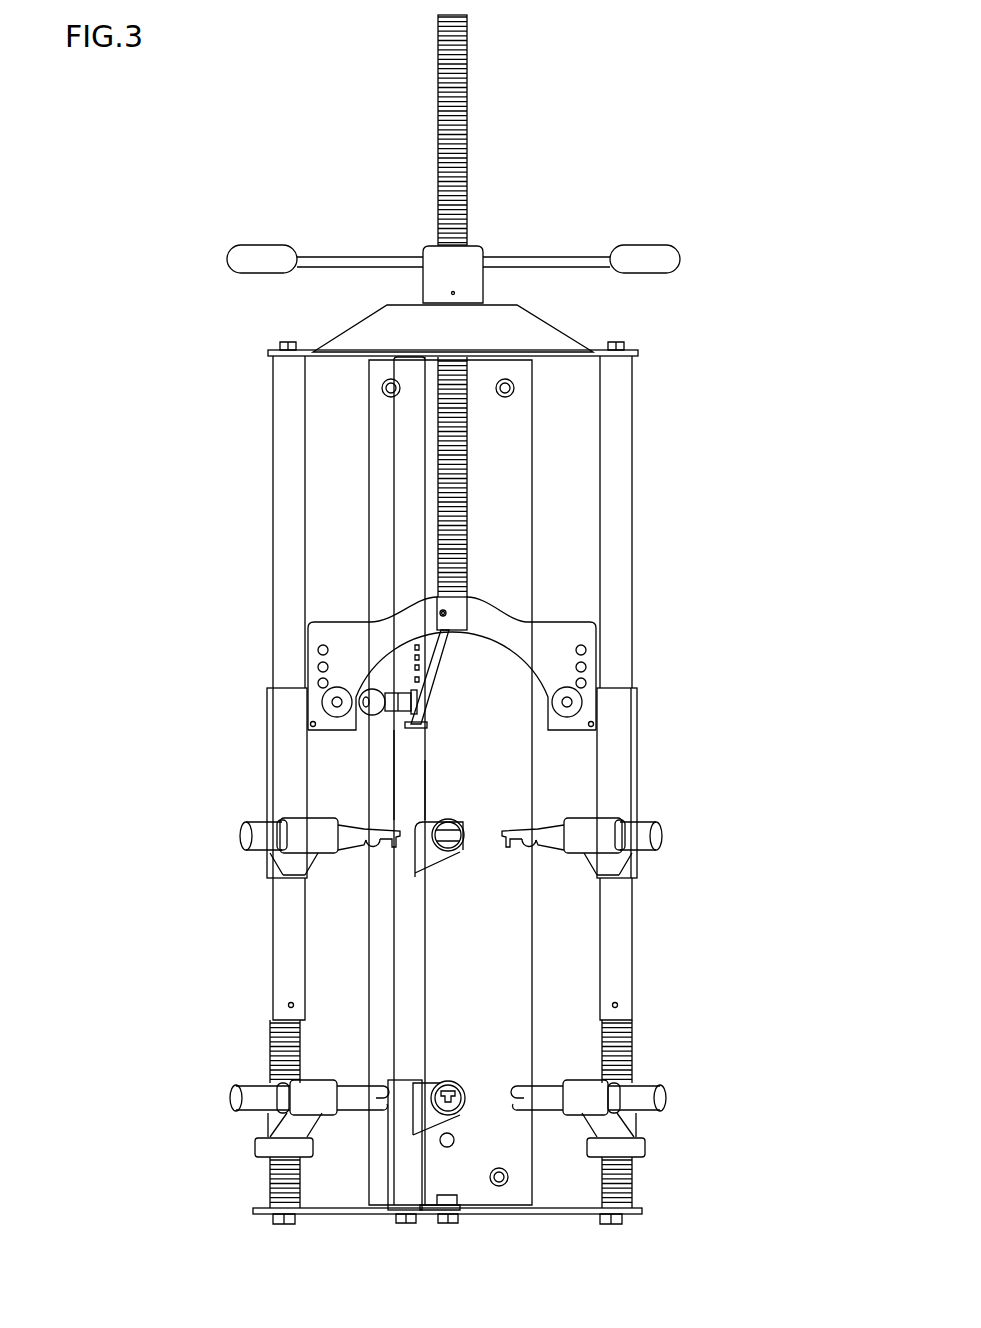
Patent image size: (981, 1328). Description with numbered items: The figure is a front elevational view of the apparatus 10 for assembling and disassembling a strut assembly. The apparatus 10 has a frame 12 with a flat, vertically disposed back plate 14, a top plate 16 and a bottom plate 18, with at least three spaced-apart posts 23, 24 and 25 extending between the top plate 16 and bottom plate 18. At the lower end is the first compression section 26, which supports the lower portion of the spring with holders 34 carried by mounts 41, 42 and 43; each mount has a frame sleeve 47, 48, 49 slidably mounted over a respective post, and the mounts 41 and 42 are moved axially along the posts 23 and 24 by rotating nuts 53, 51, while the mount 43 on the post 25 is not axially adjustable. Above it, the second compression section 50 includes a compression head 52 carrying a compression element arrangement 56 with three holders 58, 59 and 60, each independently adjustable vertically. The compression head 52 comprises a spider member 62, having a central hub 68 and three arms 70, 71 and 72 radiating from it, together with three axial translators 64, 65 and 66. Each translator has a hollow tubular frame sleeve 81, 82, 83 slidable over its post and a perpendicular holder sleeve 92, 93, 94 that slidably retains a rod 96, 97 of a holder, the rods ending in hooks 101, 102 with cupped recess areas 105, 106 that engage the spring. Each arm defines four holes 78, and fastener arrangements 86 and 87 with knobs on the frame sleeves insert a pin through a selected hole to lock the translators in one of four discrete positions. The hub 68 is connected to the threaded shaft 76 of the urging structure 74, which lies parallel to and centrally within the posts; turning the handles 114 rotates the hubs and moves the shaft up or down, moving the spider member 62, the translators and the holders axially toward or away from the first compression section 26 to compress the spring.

The apparatus 10 is at (475, 209).
The frame 12 is at (511, 675).
The back plate 14 is at (532, 455).
The top plate 16 is at (543, 318).
The bottom plate 18 is at (547, 1214).
The post 23 is at (280, 530).
The post 24 is at (622, 483).
The post 25 is at (412, 997).
The first compression section 26 is at (617, 1105).
The holders 34 is at (265, 1114).
The mount 41 is at (317, 1085).
The mount 42 is at (600, 1092).
The mount 43 is at (428, 1084).
The frame sleeve 47 is at (272, 1118).
The frame sleeve 48 is at (625, 1128).
The frame sleeve 49 is at (403, 1185).
The second compression section 50 is at (415, 646).
The nut 51 is at (637, 1160).
The compression head 52 is at (622, 810).
The nut 53 is at (259, 1158).
The compression element arrangement 56 is at (274, 801).
The holder 58 is at (223, 908).
The holder 59 is at (703, 800).
The holder 60 is at (491, 821).
The spider member 62 is at (480, 608).
The axial translator 64 is at (268, 728).
The axial translator 65 is at (636, 813).
The axial translator 66 is at (400, 808).
The central hub 68 is at (462, 617).
The arm 70 is at (347, 626).
The arm 71 is at (562, 629).
The arm 72 is at (433, 663).
The urging structure 74 is at (453, 304).
The threaded shaft 76 is at (472, 66).
The holes 78 is at (585, 649).
The frame sleeve 81 is at (272, 762).
The frame sleeve 82 is at (636, 730).
The frame sleeve 83 is at (395, 772).
The fastener arrangement 86 is at (564, 714).
The fastener arrangement 87 is at (372, 716).
The holder sleeve 92 is at (308, 848).
The holder sleeve 93 is at (588, 850).
The holder sleeve 94 is at (466, 836).
The rod 96 is at (253, 820).
The rod 97 is at (642, 850).
The hook 101 is at (378, 836).
The hook 102 is at (512, 842).
The cupped recess area 105 is at (377, 846).
The cupped recess area 106 is at (528, 846).
The handles 114 is at (572, 258).